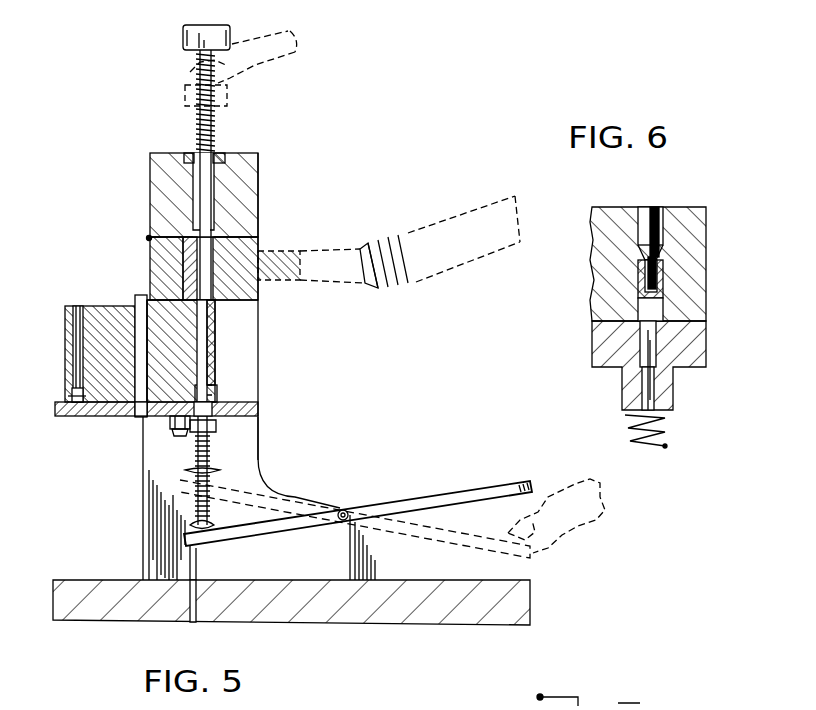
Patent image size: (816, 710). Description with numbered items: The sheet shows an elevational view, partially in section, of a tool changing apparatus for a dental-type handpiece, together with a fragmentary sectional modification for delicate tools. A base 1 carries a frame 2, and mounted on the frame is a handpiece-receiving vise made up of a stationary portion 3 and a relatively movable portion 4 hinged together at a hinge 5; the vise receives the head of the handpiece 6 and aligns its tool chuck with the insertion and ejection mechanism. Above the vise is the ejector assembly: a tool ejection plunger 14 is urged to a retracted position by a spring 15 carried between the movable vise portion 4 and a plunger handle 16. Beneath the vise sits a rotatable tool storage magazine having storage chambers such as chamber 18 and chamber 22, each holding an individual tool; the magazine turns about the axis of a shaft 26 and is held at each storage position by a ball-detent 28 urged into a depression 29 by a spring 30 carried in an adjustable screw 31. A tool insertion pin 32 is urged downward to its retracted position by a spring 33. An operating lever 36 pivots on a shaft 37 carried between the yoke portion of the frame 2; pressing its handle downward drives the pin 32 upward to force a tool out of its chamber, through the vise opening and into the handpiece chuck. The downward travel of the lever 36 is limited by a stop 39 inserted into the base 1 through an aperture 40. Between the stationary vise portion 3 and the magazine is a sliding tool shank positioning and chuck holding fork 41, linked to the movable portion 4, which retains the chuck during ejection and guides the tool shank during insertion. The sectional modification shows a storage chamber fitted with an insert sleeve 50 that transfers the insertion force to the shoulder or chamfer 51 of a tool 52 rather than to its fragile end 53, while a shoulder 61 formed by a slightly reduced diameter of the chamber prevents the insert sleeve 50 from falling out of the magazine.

In FIG. 5, the base 1 is at (530, 606).
In FIG. 5, the frame 2 is at (160, 560).
In FIG. 5, the stationary portion of vise 3 is at (258, 297).
In FIG. 5, the movable portion of vise 4 is at (258, 176).
In FIG. 5, the hinge 5 is at (146, 238).
In FIG. 5, the handpiece 6 is at (440, 215).
In FIG. 5, the tool ejection plunger 14 is at (222, 163).
In FIG. 5, the spring 15 is at (197, 122).
In FIG. 5, the plunger handle 16 is at (205, 29).
In FIG. 5, the storage chamber 18 is at (76, 306).
In FIG. 5, the storage chamber 22 is at (210, 385).
In FIG. 5, the shaft 26 is at (140, 298).
In FIG. 5, the ball-detent 28 is at (142, 420).
In FIG. 5, the depression 29 is at (102, 402).
In FIG. 5, the spring 30 is at (172, 422).
In FIG. 5, the adjustable screw 31 is at (177, 437).
In FIG. 5, the tool insertion pin 32 is at (207, 432).
In FIG. 5, the spring 33 is at (212, 470).
In FIG. 6, the spring 33 is at (655, 340).
In FIG. 5, the operating lever 36 is at (500, 484).
In FIG. 5, the shaft 37 is at (346, 510).
In FIG. 5, the stop 39 is at (198, 558).
In FIG. 5, the aperture 40 is at (195, 622).
In FIG. 5, the tool shank positioning and chuck holding fork 41 is at (148, 300).
In FIG. 6, the insert sleeve 50 is at (706, 252).
In FIG. 6, the shoulder or chamfer 51 is at (706, 242).
In FIG. 6, the tool 52 is at (652, 212).
In FIG. 6, the fragile end 53 is at (640, 290).
In FIG. 6, the shoulder 61 is at (660, 315).